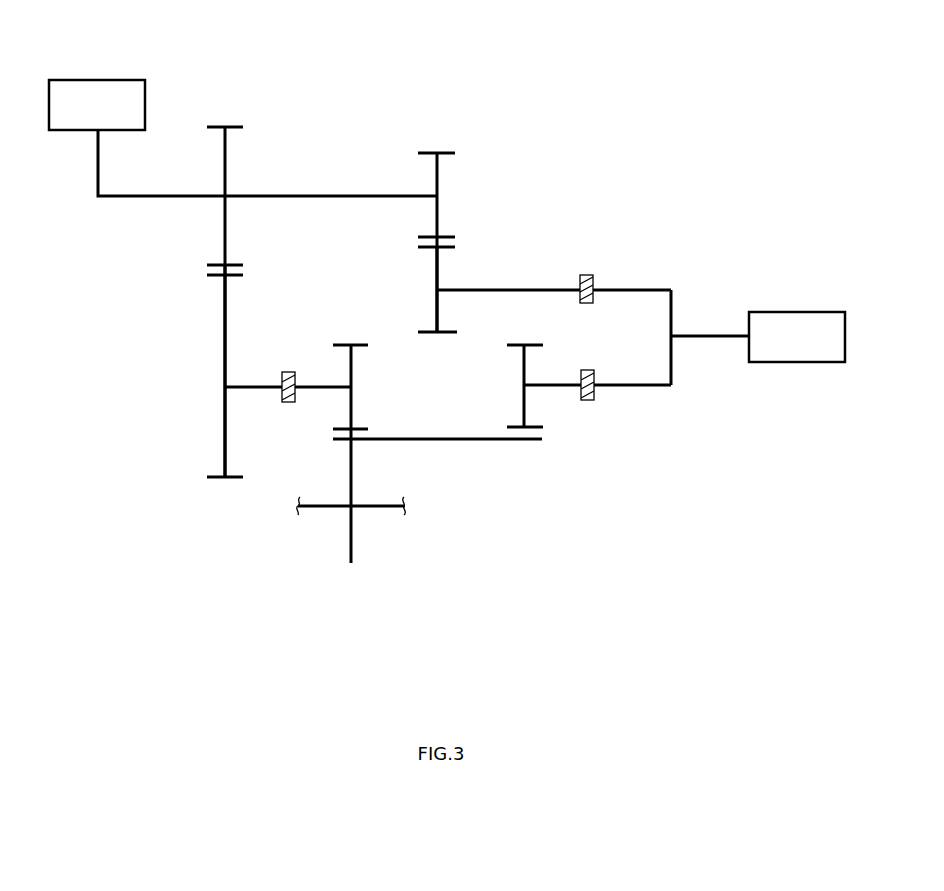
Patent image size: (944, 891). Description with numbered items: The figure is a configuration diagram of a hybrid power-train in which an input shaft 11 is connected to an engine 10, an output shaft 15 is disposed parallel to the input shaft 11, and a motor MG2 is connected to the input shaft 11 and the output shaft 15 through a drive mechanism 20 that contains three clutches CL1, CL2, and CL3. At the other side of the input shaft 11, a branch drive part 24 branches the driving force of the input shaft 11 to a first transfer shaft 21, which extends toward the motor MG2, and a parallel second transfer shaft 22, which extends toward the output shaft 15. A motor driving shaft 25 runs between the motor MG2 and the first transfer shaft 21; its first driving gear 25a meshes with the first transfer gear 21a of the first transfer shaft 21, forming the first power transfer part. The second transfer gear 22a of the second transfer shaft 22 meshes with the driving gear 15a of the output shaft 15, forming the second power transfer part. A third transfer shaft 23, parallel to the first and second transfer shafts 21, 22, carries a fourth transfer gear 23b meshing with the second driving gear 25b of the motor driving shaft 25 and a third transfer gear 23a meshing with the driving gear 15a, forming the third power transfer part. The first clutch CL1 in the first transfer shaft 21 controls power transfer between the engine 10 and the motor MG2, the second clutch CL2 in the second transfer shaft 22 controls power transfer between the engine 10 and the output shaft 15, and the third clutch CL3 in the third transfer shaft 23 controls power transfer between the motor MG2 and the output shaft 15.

The motor MG2 is at (97, 80).
The motor driving shaft 25 is at (303, 193).
The first driving gear 25a is at (435, 178).
The second driving gear 25b is at (225, 228).
The drive mechanism 20 is at (481, 152).
The first transfer shaft 21 is at (641, 290).
The first transfer gear 21a is at (435, 270).
The first clutch CL1 is at (587, 275).
The second clutch CL2 is at (587, 402).
The third clutch CL3 is at (288, 372).
The second transfer shaft 22 is at (645, 388).
The second transfer gear 22a is at (522, 370).
The third transfer shaft 23 is at (316, 390).
The third transfer gear 23a is at (354, 405).
The fourth transfer gear 23b is at (225, 318).
The branch drive part 24 is at (672, 364).
The input shaft 11 is at (710, 334).
The engine 10 is at (797, 312).
The output shaft 15 is at (313, 510).
The driving gear 15a is at (354, 468).